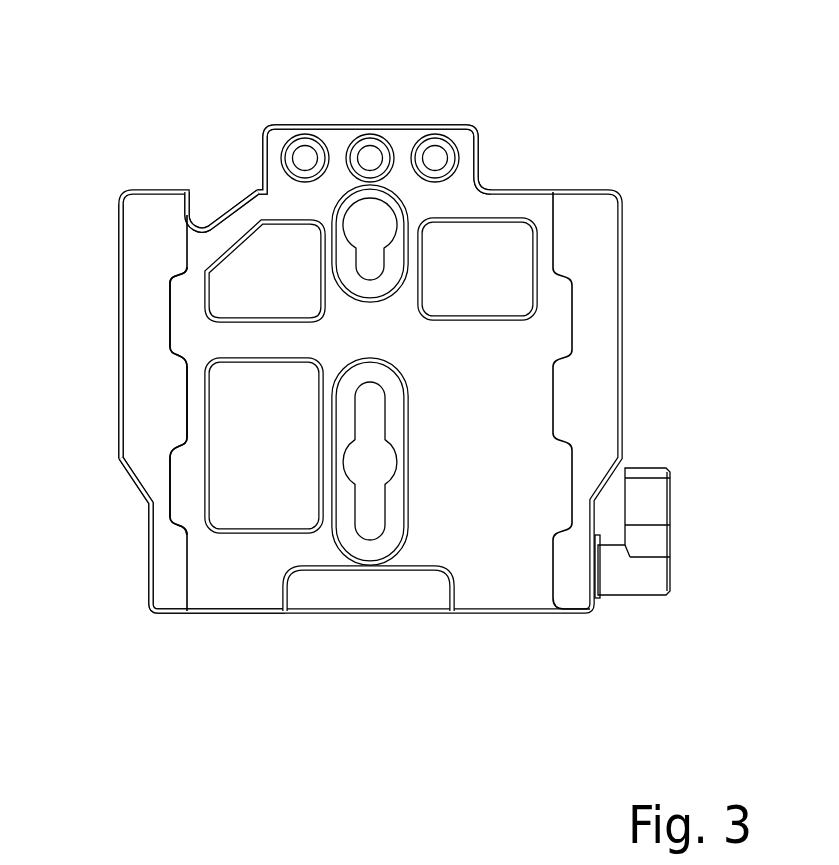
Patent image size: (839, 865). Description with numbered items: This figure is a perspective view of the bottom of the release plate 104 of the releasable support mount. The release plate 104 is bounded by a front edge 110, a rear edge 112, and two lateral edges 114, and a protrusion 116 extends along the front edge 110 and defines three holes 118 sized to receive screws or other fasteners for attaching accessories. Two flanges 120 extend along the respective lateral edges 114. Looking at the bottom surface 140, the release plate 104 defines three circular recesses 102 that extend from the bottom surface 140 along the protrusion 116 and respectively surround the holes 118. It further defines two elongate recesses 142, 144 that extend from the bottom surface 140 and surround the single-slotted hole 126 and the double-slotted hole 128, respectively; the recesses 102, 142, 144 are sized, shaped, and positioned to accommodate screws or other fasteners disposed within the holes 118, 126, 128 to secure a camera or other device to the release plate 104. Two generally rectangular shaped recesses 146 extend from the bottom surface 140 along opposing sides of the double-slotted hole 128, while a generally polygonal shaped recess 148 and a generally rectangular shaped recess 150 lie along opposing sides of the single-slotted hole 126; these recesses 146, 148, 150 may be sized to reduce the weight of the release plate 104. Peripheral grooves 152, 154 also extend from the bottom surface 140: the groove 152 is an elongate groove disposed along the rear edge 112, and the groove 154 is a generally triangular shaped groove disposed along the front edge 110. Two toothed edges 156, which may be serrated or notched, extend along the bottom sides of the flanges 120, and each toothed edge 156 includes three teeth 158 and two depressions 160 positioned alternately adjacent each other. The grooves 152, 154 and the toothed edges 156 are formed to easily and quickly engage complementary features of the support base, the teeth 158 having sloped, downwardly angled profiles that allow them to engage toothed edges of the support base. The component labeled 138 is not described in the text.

The circular recess 102 is at (437, 140).
The release plate 104 is at (703, 92).
The front edge 110 is at (556, 192).
The rear edge 112 is at (183, 618).
The lateral edge 114 is at (146, 563).
The protrusion 116 is at (480, 128).
The hole 118 is at (447, 157).
The flange 120 is at (116, 320).
The single-slotted hole 126 is at (373, 224).
The double-slotted hole 128 is at (376, 450).
The clip 138 is at (676, 575).
The bottom surface 140 is at (526, 589).
The elongate recess 142 is at (372, 292).
The elongate recess 144 is at (353, 378).
The rectangular shaped recess 146 is at (281, 457).
The polygonal shaped recess 148 is at (285, 294).
The rectangular shaped recess 150 is at (498, 286).
The peripheral groove 152 is at (370, 590).
The peripheral groove 154 is at (207, 198).
The toothed edge 156 is at (188, 340).
The tooth 158 is at (185, 403).
The depression 160 is at (178, 493).